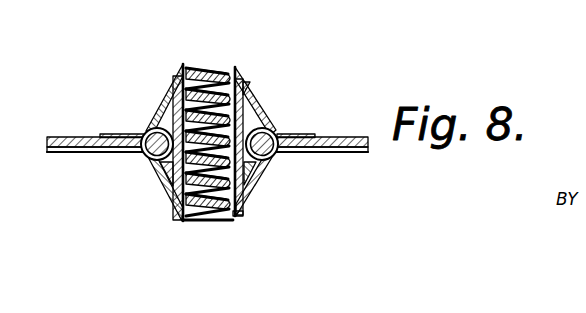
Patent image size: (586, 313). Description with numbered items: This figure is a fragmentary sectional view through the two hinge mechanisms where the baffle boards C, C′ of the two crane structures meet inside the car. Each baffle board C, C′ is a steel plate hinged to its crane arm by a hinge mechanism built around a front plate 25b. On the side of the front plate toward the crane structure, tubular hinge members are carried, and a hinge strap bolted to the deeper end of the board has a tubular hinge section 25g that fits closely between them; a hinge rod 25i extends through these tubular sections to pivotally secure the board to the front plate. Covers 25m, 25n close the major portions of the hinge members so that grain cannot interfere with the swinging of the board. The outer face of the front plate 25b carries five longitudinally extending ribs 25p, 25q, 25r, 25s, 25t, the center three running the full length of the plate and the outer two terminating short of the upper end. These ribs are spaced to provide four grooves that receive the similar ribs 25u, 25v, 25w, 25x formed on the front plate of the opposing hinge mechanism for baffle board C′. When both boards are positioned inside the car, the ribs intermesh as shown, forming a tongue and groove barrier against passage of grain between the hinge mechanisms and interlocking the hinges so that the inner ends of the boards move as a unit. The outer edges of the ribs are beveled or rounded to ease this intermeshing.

The front plate 25b is at (183, 64).
The longitudinally extending rib 25t is at (198, 70).
The rib 25u is at (243, 77).
The longitudinally extending rib 25s is at (166, 101).
The rib 25x is at (241, 83).
The tubular hinge section 25g is at (150, 134).
The rib 25w is at (252, 106).
The hinge rod 25i is at (290, 118).
The longitudinally extending rib 25r is at (158, 172).
The cover 25m is at (168, 193).
The longitudinally extending rib 25q is at (180, 220).
The longitudinally extending rib 25p is at (229, 217).
The rib 25v is at (246, 168).
The cover 25n is at (252, 192).
The baffle board C is at (63, 136).
The baffle board C′ is at (350, 137).